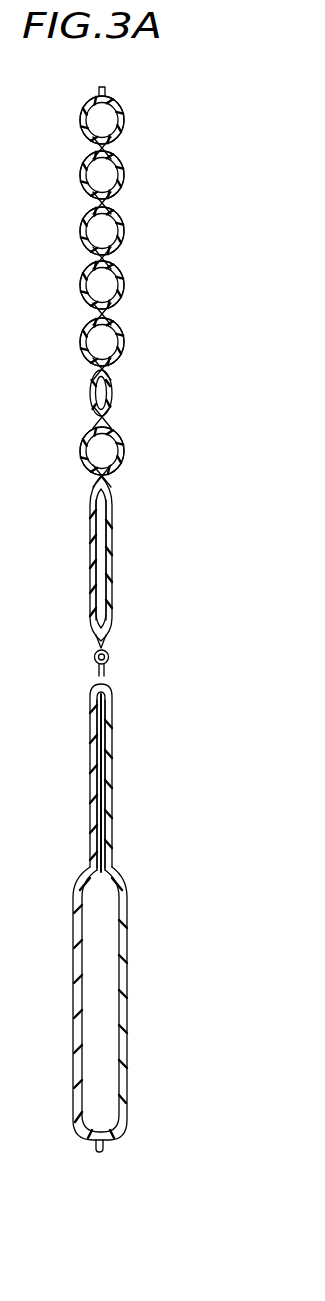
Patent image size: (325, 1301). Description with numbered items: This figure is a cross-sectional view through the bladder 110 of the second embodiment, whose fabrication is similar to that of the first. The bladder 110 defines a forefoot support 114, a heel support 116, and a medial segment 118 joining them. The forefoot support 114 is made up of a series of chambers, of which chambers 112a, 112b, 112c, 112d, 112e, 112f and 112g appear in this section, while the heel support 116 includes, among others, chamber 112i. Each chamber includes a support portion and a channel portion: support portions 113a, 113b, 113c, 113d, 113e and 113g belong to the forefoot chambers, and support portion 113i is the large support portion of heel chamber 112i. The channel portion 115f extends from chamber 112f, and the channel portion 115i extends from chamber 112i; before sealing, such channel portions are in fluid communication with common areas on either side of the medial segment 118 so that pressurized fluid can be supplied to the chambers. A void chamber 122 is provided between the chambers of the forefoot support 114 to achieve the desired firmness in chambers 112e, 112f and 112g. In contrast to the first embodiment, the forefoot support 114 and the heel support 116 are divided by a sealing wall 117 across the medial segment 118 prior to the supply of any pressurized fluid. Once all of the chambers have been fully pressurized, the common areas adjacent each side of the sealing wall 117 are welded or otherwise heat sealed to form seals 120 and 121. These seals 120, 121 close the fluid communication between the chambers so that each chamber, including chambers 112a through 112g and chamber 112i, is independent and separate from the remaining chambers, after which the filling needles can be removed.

The bladder 110 is at (87, 583).
The chamber 112a is at (84, 102).
The chamber 112b is at (84, 155).
The chamber 112c is at (86, 211).
The chamber 112d is at (82, 263).
The chamber 112e is at (82, 319).
The chamber 112f is at (88, 514).
The chamber 112g is at (86, 434).
The chamber 112i is at (88, 748).
The support portion 113a is at (108, 125).
The support portion 113b is at (106, 176).
The support portion 113c is at (108, 236).
The support portion 113d is at (108, 286).
The support portion 113e is at (107, 342).
The support portion 113g is at (104, 452).
The support portion 113i is at (106, 946).
The forefoot support 114 is at (164, 192).
The channel portion 115f is at (105, 585).
The channel portion 115i is at (104, 768).
The heel support 116 is at (93, 1009).
The sealing wall 117 is at (94, 658).
The medial segment 118 is at (100, 916).
The seal 120 is at (108, 643).
The seal 121 is at (104, 677).
The void chamber 122 is at (92, 385).